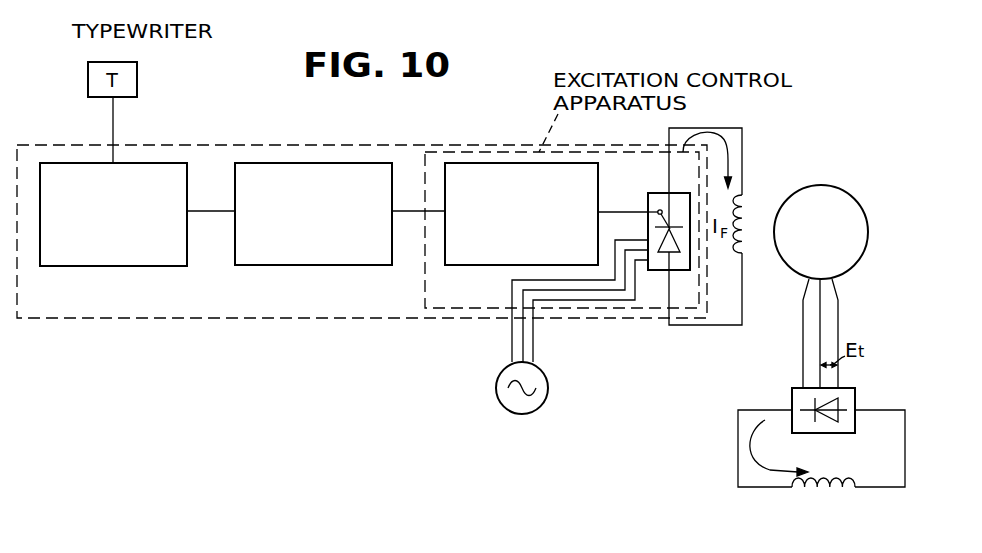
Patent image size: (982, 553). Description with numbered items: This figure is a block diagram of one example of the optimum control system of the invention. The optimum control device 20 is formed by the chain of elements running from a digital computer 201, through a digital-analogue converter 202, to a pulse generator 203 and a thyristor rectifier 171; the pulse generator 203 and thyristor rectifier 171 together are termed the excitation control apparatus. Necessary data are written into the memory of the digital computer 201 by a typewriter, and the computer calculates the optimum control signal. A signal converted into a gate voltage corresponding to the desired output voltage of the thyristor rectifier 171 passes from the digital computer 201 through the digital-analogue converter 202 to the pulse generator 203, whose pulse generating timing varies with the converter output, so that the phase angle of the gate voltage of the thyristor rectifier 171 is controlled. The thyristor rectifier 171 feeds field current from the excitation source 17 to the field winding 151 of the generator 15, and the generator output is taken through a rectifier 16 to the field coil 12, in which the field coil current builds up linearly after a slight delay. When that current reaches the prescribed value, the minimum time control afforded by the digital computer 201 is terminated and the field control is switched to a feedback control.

The excitation control apparatus 20 is at (258, 143).
The digital computer 201 is at (110, 266).
The digital-analogue converter 202 is at (292, 265).
The pulse generator 203 is at (457, 163).
The excitation source 17 is at (587, 414).
The thyristor rectifier 171 is at (660, 272).
The generator 15 is at (900, 242).
The generator armature 151 is at (793, 193).
The rectifier 16 is at (855, 400).
The load winding 12 is at (818, 490).